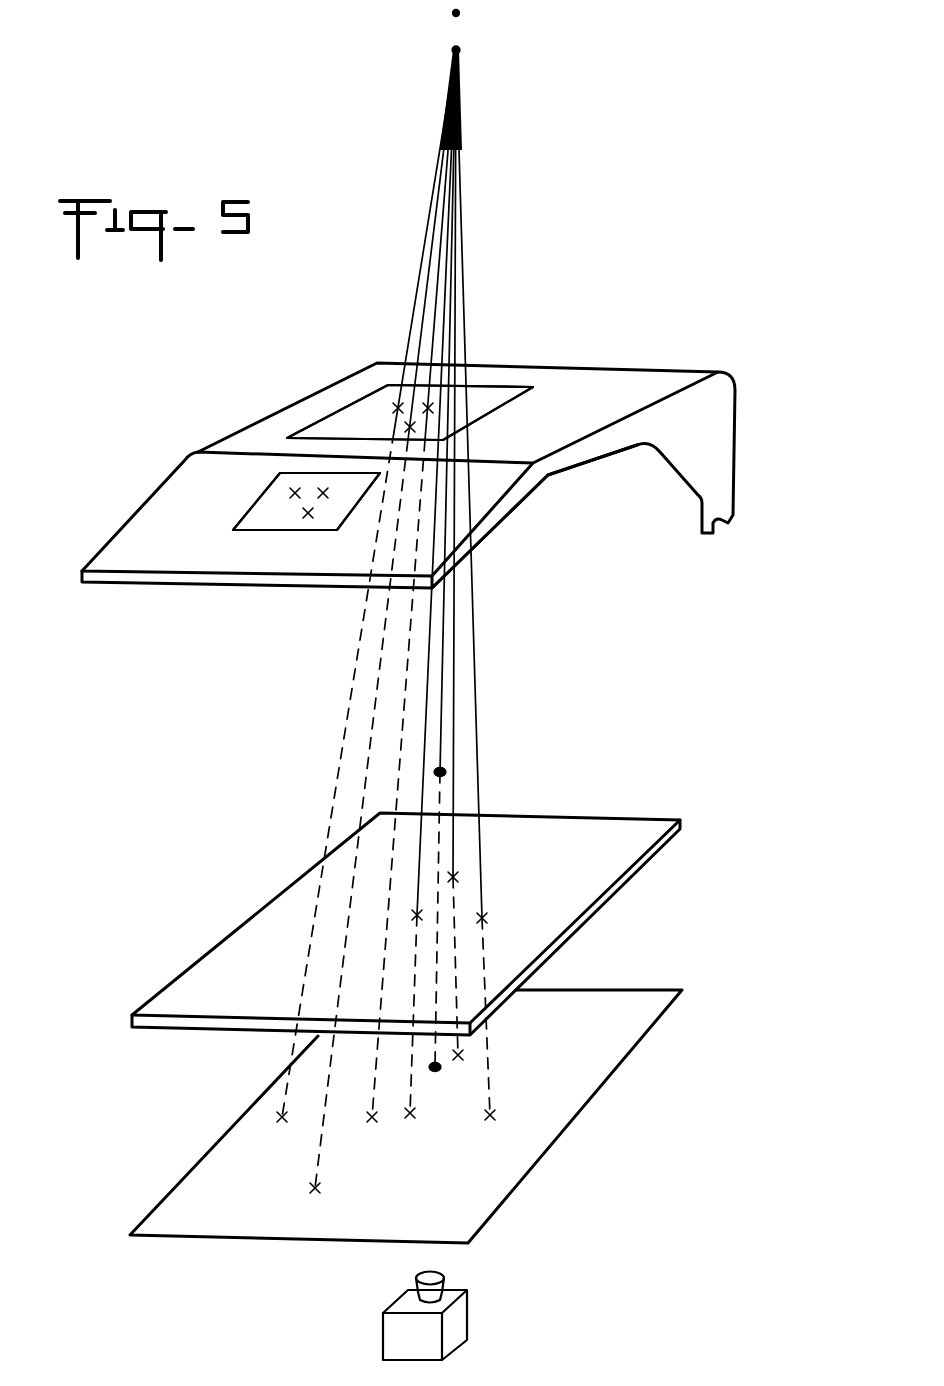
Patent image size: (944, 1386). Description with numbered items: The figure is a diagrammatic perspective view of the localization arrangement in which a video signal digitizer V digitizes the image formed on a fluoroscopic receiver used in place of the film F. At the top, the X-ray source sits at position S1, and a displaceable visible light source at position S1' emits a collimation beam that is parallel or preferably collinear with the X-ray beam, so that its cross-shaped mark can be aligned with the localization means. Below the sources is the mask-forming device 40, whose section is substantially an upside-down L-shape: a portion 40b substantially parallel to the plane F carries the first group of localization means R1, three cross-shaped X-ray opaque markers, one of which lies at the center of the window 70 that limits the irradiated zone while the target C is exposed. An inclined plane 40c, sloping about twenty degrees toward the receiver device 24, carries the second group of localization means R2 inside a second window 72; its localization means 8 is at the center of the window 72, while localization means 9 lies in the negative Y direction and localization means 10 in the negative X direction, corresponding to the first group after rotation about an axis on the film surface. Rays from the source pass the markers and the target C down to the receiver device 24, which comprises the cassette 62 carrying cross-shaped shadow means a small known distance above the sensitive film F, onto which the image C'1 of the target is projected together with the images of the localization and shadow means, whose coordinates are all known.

The X-ray radiation source position S1 is at (503, 617).
The collimation light source position S1' is at (643, 18).
The mask-forming device 40 is at (440, 452).
The parallel portion 40b is at (578, 434).
The inclined plane 40c is at (480, 512).
The first group of localization means R1 is at (417, 380).
The window 70 is at (495, 403).
The second group of localization means R2 is at (269, 505).
The window 72 is at (290, 528).
The target C is at (475, 755).
The cassette 62 is at (419, 897).
The receiver device 24 is at (359, 1001).
The sensitive film F is at (392, 1116).
The image of the target C'1 is at (445, 1084).
The video signal digitizer V is at (418, 1354).
The localization means 8 is at (329, 488).
The localization means 9 is at (314, 516).
The localization means 10 is at (291, 488).